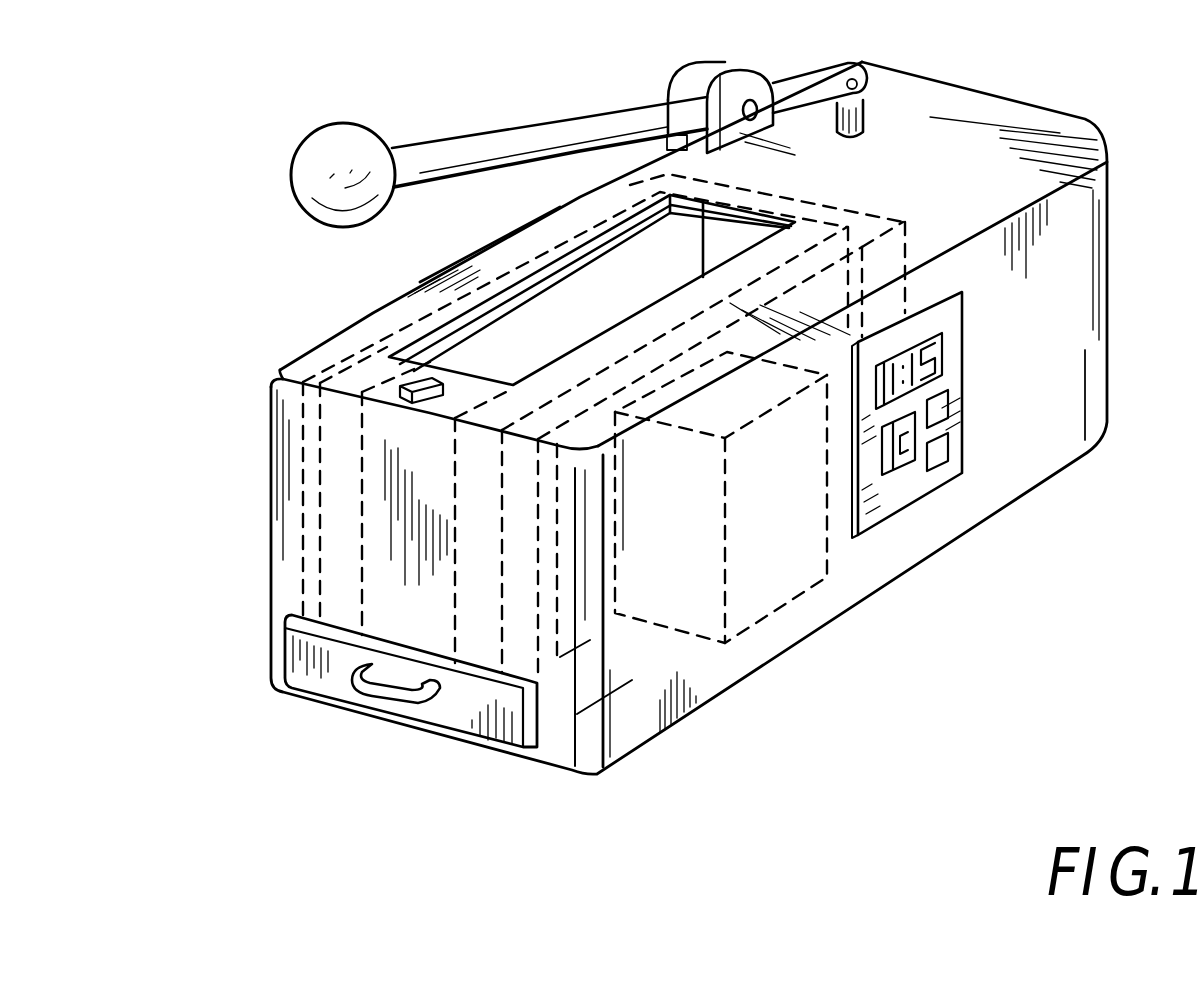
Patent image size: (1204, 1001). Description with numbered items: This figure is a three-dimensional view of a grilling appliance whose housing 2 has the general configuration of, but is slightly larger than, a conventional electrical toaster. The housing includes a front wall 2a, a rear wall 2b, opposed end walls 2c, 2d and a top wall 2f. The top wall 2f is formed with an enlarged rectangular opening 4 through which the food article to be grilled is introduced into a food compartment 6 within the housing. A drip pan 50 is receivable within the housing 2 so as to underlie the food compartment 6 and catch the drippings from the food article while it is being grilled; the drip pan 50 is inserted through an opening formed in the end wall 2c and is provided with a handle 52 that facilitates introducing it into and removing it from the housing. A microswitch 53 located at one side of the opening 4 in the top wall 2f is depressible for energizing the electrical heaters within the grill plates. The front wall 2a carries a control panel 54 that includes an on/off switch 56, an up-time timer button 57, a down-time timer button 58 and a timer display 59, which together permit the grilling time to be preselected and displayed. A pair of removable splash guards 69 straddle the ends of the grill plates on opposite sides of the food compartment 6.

The housing 2 is at (246, 431).
The front wall 2a is at (808, 600).
The rear wall 2b is at (365, 313).
The end wall 2c is at (272, 592).
The end wall 2d is at (923, 207).
The top wall 2f is at (478, 260).
The rectangular opening 4 is at (712, 242).
The food compartment 6 is at (596, 316).
The drip pan 50 is at (470, 713).
The handle 52 is at (370, 690).
The microswitch 53 is at (436, 384).
The control panel 54 is at (922, 488).
The on/off switch 56 is at (897, 472).
The up-time timer button 57 is at (946, 406).
The down-time timer button 58 is at (944, 448).
The timer display 59 is at (943, 352).
The splash guards 69 is at (305, 368).